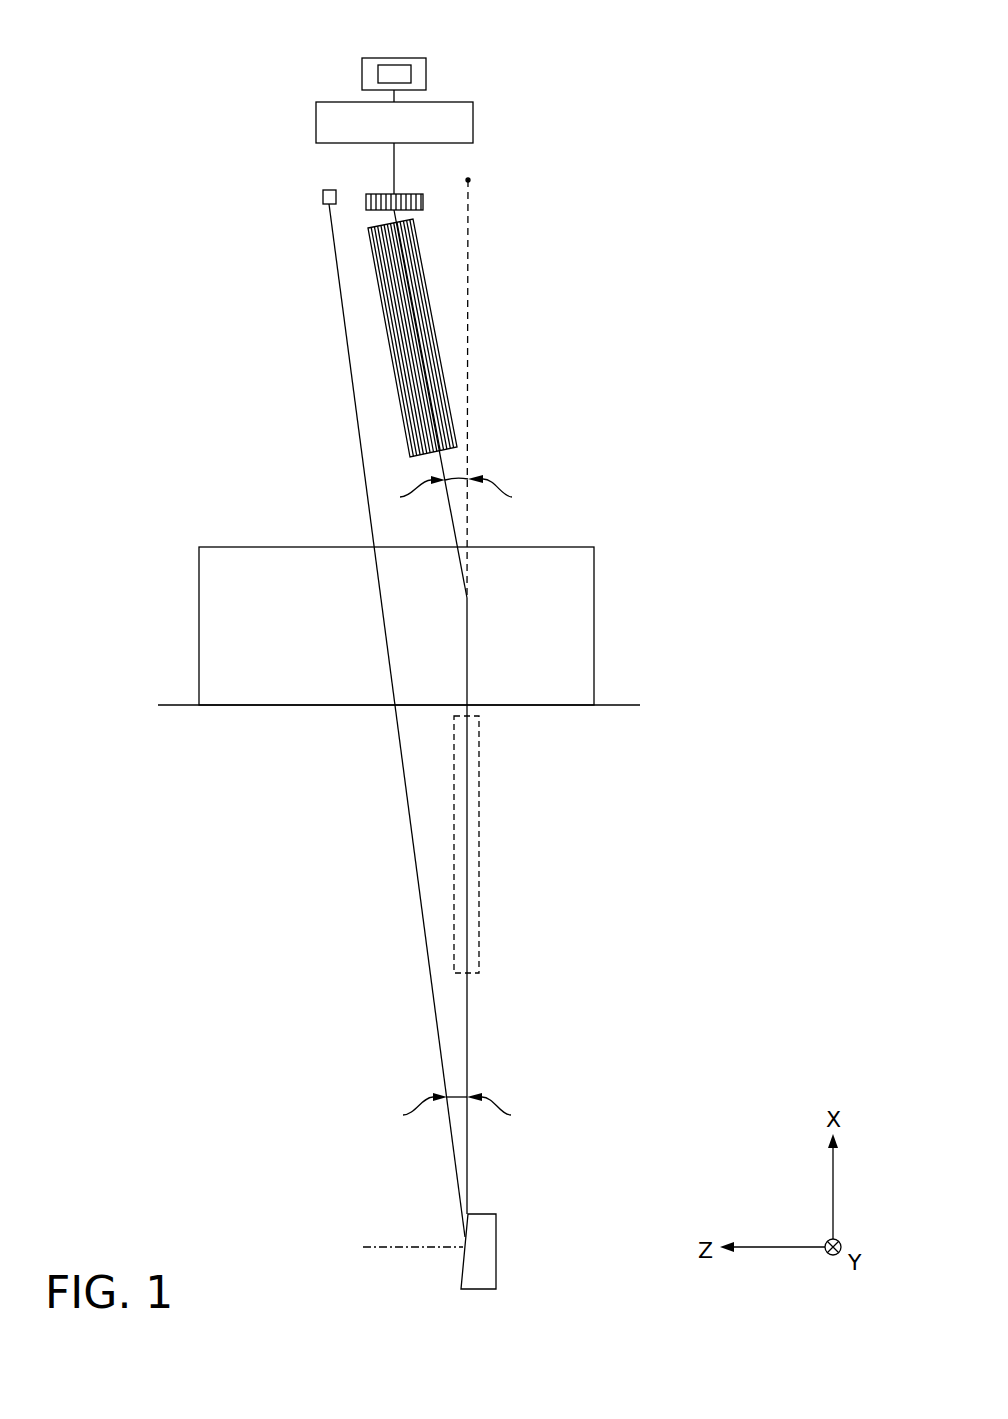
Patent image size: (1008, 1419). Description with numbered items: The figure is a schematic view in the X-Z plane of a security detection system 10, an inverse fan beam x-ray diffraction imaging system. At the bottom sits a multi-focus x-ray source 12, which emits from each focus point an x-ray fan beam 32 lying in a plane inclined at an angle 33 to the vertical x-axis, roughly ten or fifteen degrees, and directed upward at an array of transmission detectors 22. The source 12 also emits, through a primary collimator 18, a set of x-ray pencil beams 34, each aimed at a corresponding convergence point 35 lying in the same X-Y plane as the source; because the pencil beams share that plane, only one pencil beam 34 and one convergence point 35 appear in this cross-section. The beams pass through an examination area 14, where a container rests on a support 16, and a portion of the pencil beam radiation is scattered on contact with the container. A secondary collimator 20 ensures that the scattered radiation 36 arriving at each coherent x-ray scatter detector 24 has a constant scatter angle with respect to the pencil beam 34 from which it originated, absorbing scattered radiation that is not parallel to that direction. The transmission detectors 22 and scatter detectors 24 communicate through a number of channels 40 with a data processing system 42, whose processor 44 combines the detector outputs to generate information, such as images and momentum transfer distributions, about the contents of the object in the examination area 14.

The security detection system 10 is at (136, 42).
The multi-focus x-ray source 12 is at (498, 1232).
The examination area 14 is at (585, 548).
The support 16 is at (535, 707).
The primary collimator 18 is at (480, 863).
The secondary collimator 20 is at (386, 325).
The transmission detectors 22 is at (321, 198).
The coherent x-ray scatter detectors 24 is at (372, 196).
The x-ray fan beam 32 is at (421, 925).
The angle 33 is at (457, 1093).
The x-ray pencil beam 34 is at (465, 1032).
The convergence point 35 is at (470, 181).
The scattered radiation 36 is at (450, 512).
The channels 40 is at (488, 121).
The data processing system 42 is at (438, 72).
The processor 44 is at (381, 75).